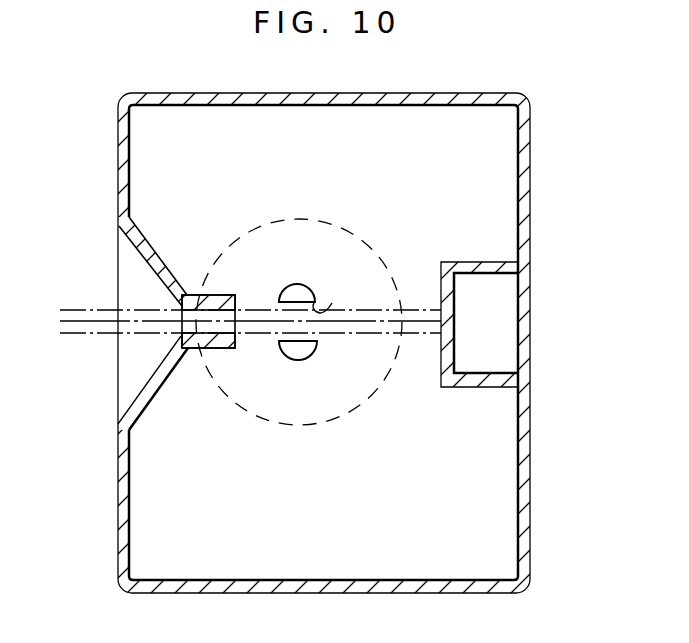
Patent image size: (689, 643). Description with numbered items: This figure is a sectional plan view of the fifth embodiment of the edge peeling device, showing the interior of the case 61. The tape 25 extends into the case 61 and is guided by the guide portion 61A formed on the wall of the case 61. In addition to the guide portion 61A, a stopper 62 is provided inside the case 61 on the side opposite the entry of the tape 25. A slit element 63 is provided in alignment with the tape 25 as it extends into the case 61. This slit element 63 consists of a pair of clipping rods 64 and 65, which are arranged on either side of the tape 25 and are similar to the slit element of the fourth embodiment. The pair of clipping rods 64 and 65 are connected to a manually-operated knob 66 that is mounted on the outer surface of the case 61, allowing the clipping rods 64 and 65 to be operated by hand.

The case 61 is at (532, 128).
The guide portion 61A is at (140, 404).
The tape 25 is at (87, 308).
The stopper 62 is at (472, 387).
The slit element 63 is at (332, 303).
The clipping rod 64 is at (298, 283).
The clipping rod 65 is at (312, 357).
The manually-operated knob 66 is at (262, 217).